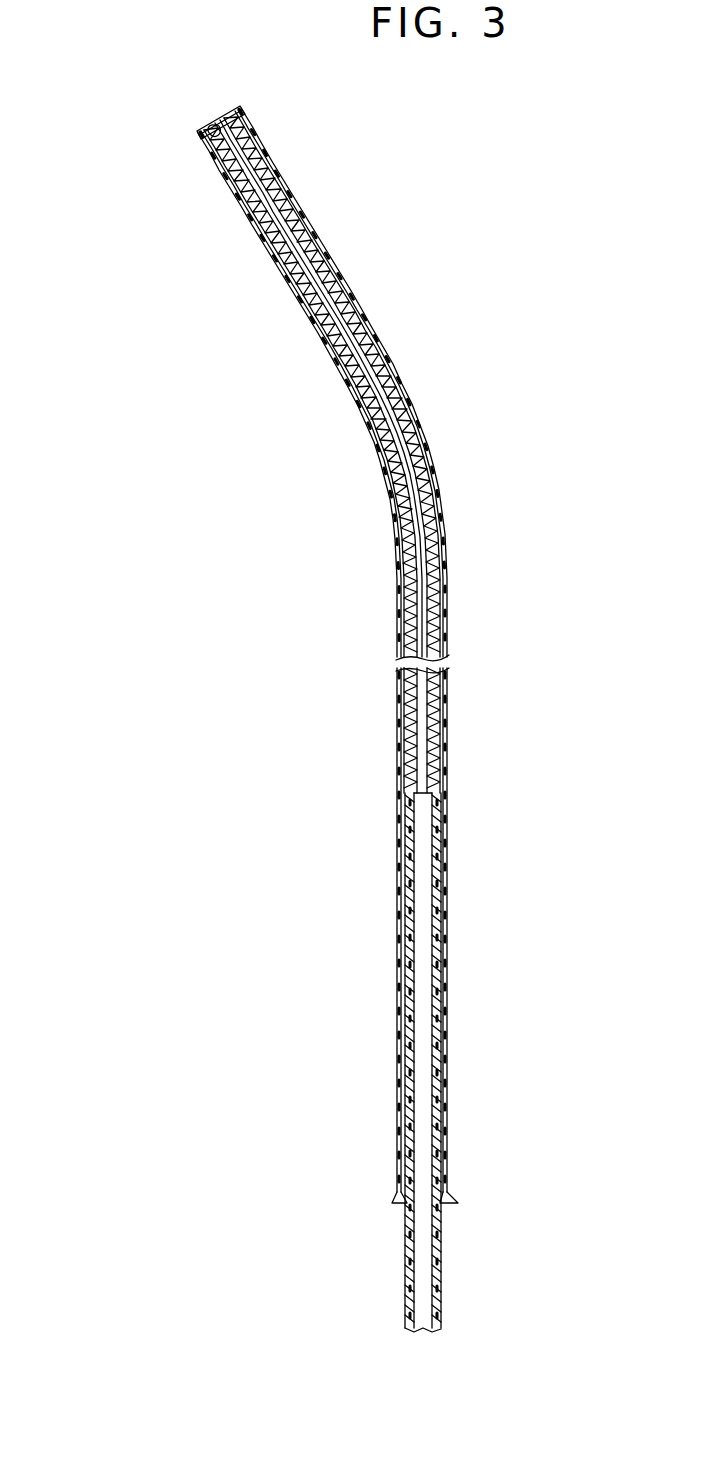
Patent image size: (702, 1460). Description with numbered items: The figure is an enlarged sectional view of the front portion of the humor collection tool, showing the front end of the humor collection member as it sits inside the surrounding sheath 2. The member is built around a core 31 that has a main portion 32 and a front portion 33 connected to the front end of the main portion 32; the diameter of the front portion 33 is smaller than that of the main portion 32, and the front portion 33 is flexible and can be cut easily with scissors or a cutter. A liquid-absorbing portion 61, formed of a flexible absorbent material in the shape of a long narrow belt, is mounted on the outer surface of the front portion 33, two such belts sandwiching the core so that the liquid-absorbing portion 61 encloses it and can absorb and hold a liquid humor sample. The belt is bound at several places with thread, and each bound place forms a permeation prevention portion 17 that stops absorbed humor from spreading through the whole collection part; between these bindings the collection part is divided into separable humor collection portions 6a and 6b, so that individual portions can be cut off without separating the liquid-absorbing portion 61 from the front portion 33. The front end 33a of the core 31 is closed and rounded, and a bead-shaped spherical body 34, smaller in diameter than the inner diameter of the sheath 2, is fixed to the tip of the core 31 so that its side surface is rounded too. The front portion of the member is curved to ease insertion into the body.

The sheath tube 2 is at (450, 846).
The separated humor collection portion 6a is at (424, 471).
The separated humor collection portion 6b is at (438, 637).
The permeation prevention portion 17 is at (431, 575).
The core 31 is at (427, 1212).
The main portion 32 is at (440, 985).
The front portion 33 is at (395, 392).
The front end 33a is at (206, 128).
The bead-shaped spherical body 34 is at (206, 150).
The liquid-absorbing portion 61 is at (330, 262).